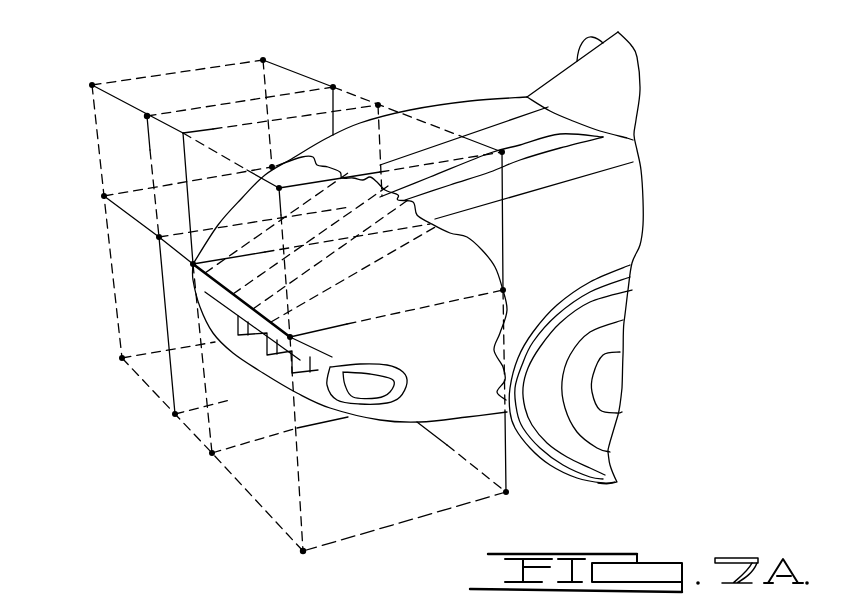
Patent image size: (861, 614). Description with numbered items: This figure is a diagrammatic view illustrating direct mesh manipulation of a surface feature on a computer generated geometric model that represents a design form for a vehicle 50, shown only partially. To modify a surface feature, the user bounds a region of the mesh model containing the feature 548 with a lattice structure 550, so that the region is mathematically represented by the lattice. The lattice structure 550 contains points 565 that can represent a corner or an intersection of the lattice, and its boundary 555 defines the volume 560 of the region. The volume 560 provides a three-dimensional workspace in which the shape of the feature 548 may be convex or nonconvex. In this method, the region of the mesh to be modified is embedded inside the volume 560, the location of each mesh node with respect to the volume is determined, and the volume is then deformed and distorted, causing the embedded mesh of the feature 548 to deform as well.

The vehicle 50 is at (498, 90).
The feature 548 is at (473, 265).
The lattice structure 550 is at (309, 74).
The boundary 555 is at (99, 155).
The volume 560 is at (138, 262).
The points 565 is at (147, 115).